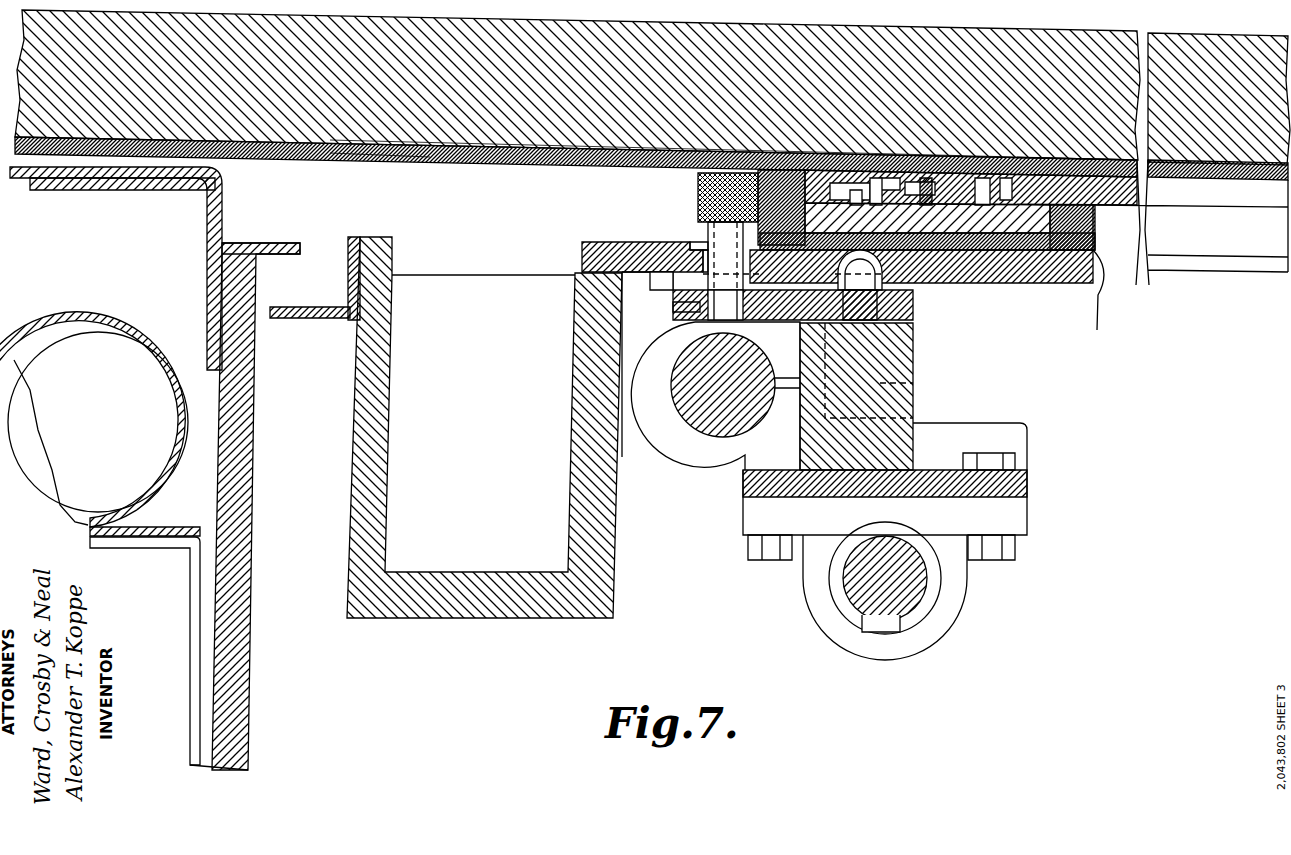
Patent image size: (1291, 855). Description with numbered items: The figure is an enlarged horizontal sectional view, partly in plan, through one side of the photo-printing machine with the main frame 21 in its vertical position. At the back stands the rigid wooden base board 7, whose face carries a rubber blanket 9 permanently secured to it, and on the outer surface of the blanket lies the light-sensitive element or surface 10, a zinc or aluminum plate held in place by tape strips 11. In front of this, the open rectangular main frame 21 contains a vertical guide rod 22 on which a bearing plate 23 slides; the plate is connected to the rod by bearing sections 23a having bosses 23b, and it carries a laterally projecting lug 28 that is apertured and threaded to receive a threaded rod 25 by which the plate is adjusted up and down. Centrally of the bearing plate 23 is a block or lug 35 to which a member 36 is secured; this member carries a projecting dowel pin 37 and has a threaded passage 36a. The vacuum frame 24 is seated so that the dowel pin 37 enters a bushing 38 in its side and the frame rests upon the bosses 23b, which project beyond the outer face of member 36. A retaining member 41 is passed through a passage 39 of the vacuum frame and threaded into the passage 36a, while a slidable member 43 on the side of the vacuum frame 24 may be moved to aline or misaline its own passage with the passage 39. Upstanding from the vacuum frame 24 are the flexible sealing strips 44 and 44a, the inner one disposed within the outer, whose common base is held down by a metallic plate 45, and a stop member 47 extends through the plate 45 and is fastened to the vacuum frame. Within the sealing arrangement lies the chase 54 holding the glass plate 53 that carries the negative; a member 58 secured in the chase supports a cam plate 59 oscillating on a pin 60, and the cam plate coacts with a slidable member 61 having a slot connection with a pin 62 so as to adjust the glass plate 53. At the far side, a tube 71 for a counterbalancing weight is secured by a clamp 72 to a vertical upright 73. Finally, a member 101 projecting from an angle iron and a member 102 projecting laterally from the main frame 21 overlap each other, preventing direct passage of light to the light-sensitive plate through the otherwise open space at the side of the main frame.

The base board 7 is at (906, 36).
The rubber blanket 9 is at (462, 153).
The light-sensitive element or surface 10 is at (548, 158).
The tape strips 11 is at (360, 157).
The main frame 21 is at (603, 588).
The vertical guide rod 22 is at (720, 425).
The bearing plate 23 is at (1030, 486).
The bearing section 23a is at (672, 432).
The boss 23b is at (690, 283).
The vacuum frame 24 is at (596, 243).
The threaded rod 25 is at (848, 588).
The laterally projecting lug 28 is at (745, 518).
The block or lug 35 is at (915, 385).
The member 36 is at (915, 318).
The threaded passage 36a is at (680, 310).
The dowel pin 37 is at (880, 292).
The bushing 38 is at (884, 280).
The passage 39 is at (700, 246).
The member 41 is at (705, 224).
The member 43 is at (703, 252).
The sealing strip or member 44 is at (780, 175).
The sealing strip or member 44a is at (1098, 295).
The metallic plate 45 is at (1040, 252).
The stop member 47 is at (955, 215).
The glass plate 53 is at (1162, 207).
The chase 54 is at (818, 172).
The member 58 is at (878, 180).
The cam plate 59 is at (858, 190).
The pin 60 is at (928, 180).
The member 61 is at (1010, 178).
The pin 62 is at (985, 178).
The tube 71 is at (150, 492).
The clamp 72 is at (166, 548).
The vertical upright 73 is at (232, 688).
The member 101 is at (312, 230).
The member 102 is at (305, 320).